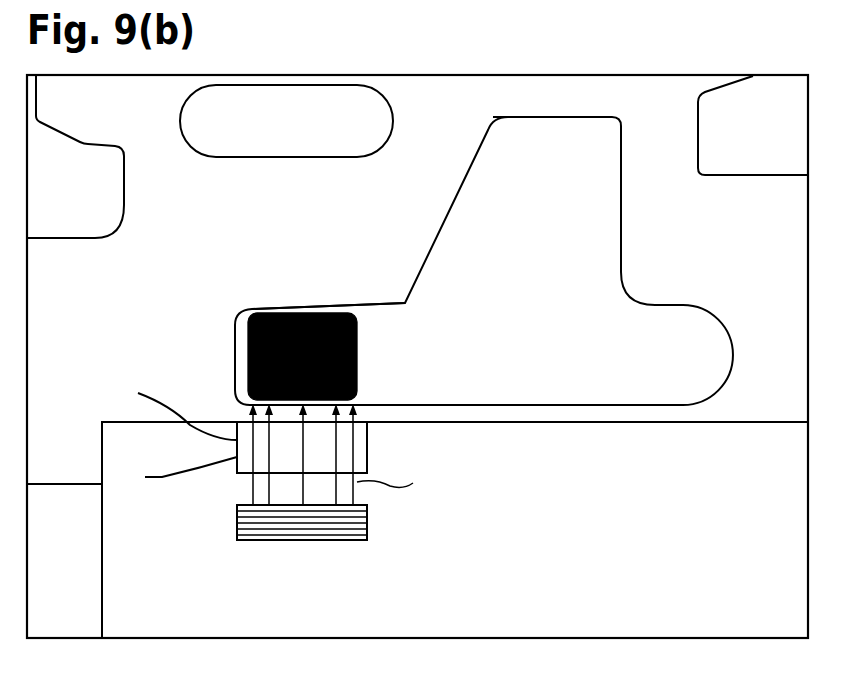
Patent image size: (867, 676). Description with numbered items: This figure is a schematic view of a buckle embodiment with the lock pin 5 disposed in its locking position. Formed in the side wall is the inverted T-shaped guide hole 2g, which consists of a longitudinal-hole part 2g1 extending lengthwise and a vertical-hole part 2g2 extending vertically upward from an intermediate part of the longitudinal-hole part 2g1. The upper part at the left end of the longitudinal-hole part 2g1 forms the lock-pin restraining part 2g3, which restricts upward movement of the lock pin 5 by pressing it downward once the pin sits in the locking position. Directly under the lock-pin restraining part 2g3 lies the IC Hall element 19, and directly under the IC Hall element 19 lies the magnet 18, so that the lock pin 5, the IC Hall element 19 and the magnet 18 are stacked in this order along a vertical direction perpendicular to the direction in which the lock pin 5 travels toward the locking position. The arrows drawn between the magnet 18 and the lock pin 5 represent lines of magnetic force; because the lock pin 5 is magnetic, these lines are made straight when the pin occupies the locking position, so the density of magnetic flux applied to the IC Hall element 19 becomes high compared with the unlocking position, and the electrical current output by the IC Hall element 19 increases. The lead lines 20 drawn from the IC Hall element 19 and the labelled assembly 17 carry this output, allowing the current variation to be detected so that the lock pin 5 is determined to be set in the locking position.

The inverted T-shaped guide hole 2g is at (527, 273).
The longitudinal-hole part 2g1 is at (626, 405).
The vertical-hole part 2g2 is at (551, 118).
The lock-pin restraining part 2g3 is at (365, 303).
The lock pin 5 is at (358, 356).
The electromagnet 17 is at (345, 466).
The magnet 18 is at (367, 525).
The IC Hall element 19 is at (360, 443).
The lead wires 20 is at (158, 403).